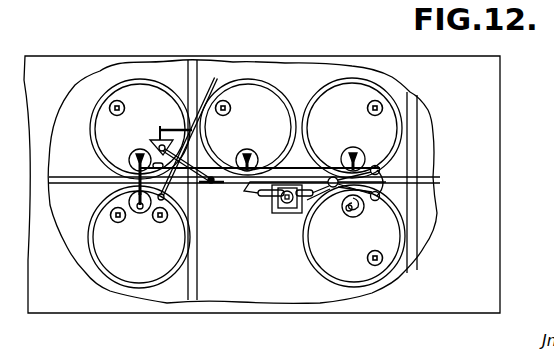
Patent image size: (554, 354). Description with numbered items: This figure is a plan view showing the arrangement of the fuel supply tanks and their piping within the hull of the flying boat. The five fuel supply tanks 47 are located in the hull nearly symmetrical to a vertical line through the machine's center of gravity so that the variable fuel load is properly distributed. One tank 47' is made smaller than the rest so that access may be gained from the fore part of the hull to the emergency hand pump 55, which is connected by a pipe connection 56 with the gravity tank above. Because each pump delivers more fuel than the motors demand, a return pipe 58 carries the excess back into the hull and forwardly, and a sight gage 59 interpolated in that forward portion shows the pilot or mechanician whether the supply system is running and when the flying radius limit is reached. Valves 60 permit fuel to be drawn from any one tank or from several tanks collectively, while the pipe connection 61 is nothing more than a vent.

The fuel supply tank 47 is at (389, 236).
The smaller fuel supply tank 47' is at (139, 237).
The hand pump 55 is at (285, 199).
The pipe connection 56 is at (202, 184).
The return pipe 58 is at (198, 160).
The sight gage 59 is at (159, 133).
The valves 60 is at (139, 156).
The vent pipe connection 61 is at (219, 76).